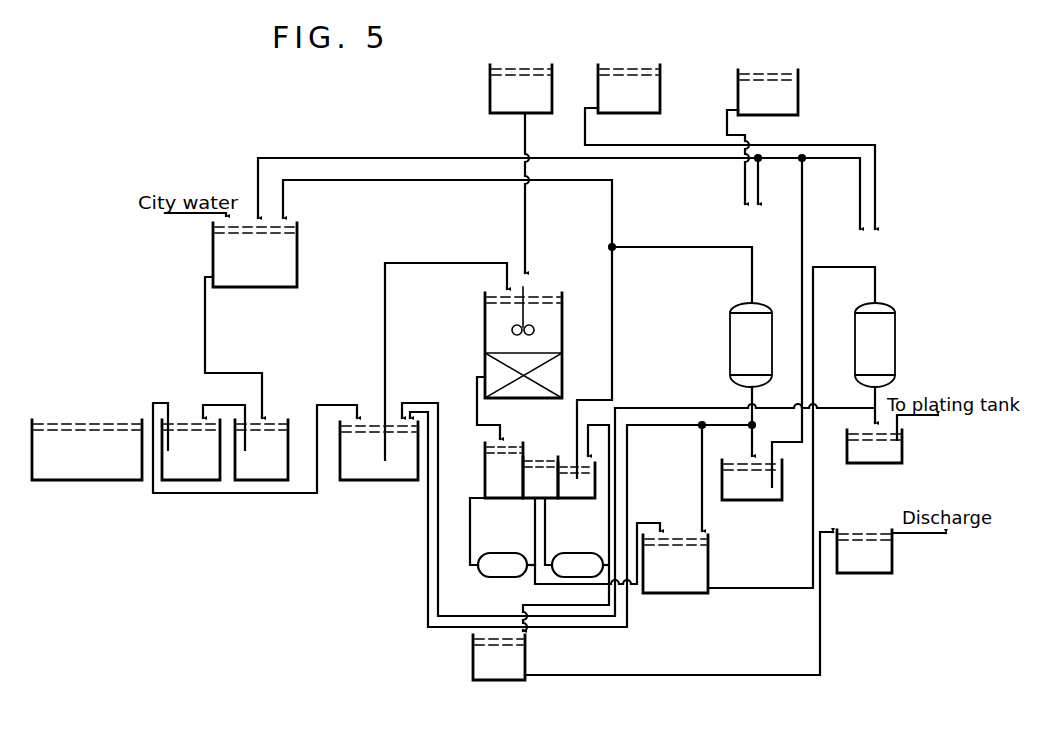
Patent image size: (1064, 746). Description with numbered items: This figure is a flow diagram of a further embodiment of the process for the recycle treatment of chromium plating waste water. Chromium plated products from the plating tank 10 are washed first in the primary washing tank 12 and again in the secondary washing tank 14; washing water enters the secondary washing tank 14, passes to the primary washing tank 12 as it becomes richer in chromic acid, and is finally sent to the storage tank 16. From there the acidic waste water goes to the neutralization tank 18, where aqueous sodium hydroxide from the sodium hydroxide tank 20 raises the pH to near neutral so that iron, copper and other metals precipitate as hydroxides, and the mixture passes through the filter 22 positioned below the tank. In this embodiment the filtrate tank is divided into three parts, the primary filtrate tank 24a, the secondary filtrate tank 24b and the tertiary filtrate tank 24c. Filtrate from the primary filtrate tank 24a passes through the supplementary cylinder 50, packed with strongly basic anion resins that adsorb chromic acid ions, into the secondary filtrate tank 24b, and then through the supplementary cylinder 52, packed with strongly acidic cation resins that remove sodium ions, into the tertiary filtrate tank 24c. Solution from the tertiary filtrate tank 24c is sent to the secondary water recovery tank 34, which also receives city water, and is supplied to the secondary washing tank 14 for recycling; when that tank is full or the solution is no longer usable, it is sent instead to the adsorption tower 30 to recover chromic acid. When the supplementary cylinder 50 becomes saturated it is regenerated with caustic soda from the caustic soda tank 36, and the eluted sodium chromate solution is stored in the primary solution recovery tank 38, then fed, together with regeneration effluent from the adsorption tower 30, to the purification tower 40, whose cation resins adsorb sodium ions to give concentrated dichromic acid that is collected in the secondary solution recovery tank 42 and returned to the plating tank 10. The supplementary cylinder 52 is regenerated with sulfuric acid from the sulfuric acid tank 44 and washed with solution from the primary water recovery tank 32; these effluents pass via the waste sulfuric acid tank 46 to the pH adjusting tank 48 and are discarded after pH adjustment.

The plating tank 10 is at (87, 433).
The primary washing tank 12 is at (189, 470).
The secondary washing tank 14 is at (259, 470).
The storage tank 16 is at (368, 467).
The neutralization tank 18 is at (562, 332).
The sodium hydroxide tank 20 is at (490, 93).
The filter 22 is at (562, 378).
The primary filtrate tank 24a is at (490, 470).
The secondary filtrate tank 24b is at (538, 455).
The tertiary filtrate tank 24c is at (572, 490).
The adsorption tower 30 is at (730, 342).
The primary water recovery tank 32 is at (750, 488).
The secondary water recovery tank 34 is at (297, 260).
The caustic soda tank 36 is at (798, 96).
The primary solution recovery tank 38 is at (673, 578).
The purification tower 40 is at (895, 343).
The secondary solution recovery tank 42 is at (876, 452).
The sulfuric acid tank 44 is at (660, 93).
The waste sulfuric acid tank 46 is at (475, 660).
The pH adjusting tank 48 is at (861, 566).
The supplementary cylinder 50 is at (507, 565).
The supplementary cylinder 52 is at (558, 568).